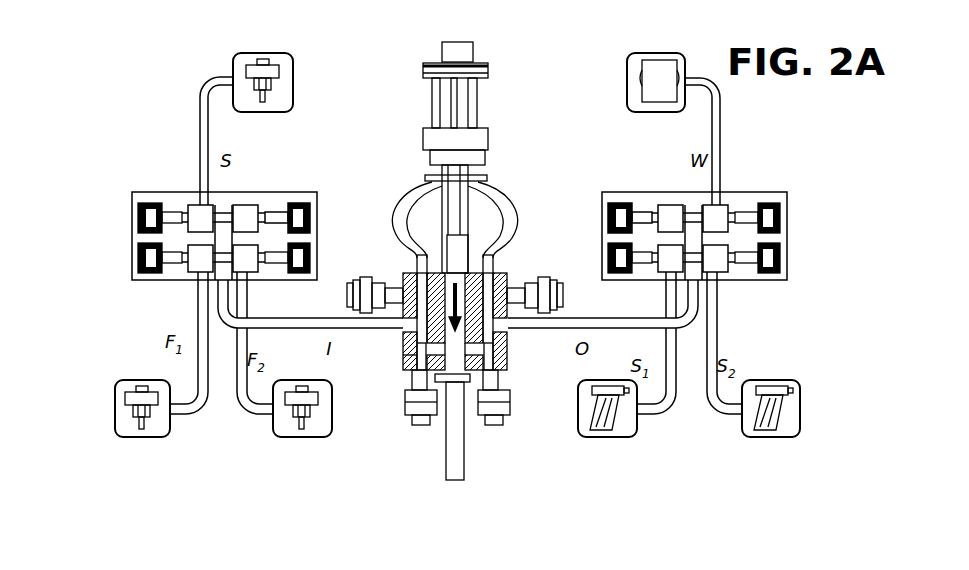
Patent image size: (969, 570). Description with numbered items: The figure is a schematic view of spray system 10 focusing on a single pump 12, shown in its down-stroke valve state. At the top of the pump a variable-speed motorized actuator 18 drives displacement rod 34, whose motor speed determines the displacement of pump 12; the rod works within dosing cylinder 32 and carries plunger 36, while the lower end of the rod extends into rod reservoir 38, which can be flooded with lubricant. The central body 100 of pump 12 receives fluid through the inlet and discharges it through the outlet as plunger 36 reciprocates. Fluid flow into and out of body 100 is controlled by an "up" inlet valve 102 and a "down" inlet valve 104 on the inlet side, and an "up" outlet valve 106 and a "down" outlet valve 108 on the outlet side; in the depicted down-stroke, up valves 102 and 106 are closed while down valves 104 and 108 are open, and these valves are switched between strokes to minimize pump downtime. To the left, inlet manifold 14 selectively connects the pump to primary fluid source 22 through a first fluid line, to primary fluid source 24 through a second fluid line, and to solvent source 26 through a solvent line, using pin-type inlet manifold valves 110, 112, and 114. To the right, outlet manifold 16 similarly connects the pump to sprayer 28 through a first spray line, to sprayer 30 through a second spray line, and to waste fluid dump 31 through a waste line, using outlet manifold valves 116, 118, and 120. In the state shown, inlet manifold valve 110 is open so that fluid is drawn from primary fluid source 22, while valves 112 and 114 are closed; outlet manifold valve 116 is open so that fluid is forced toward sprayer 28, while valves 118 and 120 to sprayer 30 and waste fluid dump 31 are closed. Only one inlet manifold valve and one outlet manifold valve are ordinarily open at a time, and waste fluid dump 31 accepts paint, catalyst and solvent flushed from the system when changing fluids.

The spray system 10 is at (158, 54).
The pump 12 is at (384, 362).
The inlet manifold 14 is at (133, 287).
The outlet manifold 16 is at (803, 271).
The motorized actuator 18 is at (462, 50).
The primary fluid source 22 is at (135, 440).
The primary fluid source 24 is at (300, 440).
The solvent source 26 is at (268, 52).
The sprayer 28 is at (607, 440).
The sprayer 30 is at (772, 440).
The waste fluid dump 31 is at (663, 52).
The dosing cylinder 32 is at (470, 212).
The displacement rod 34 is at (455, 202).
The plunger 36 is at (455, 251).
The rod reservoir 38 is at (455, 465).
The body 100 is at (498, 370).
The up inlet valve 102 is at (412, 368).
The down inlet valve 104 is at (403, 288).
The up outlet valve 106 is at (503, 270).
The down outlet valve 108 is at (500, 358).
The inlet manifold valve 110 is at (140, 257).
The inlet manifold valve 112 is at (275, 262).
The inlet manifold valve 114 is at (172, 202).
The outlet manifold valve 116 is at (652, 260).
The outlet manifold valve 118 is at (735, 265).
The outlet manifold valve 120 is at (760, 202).